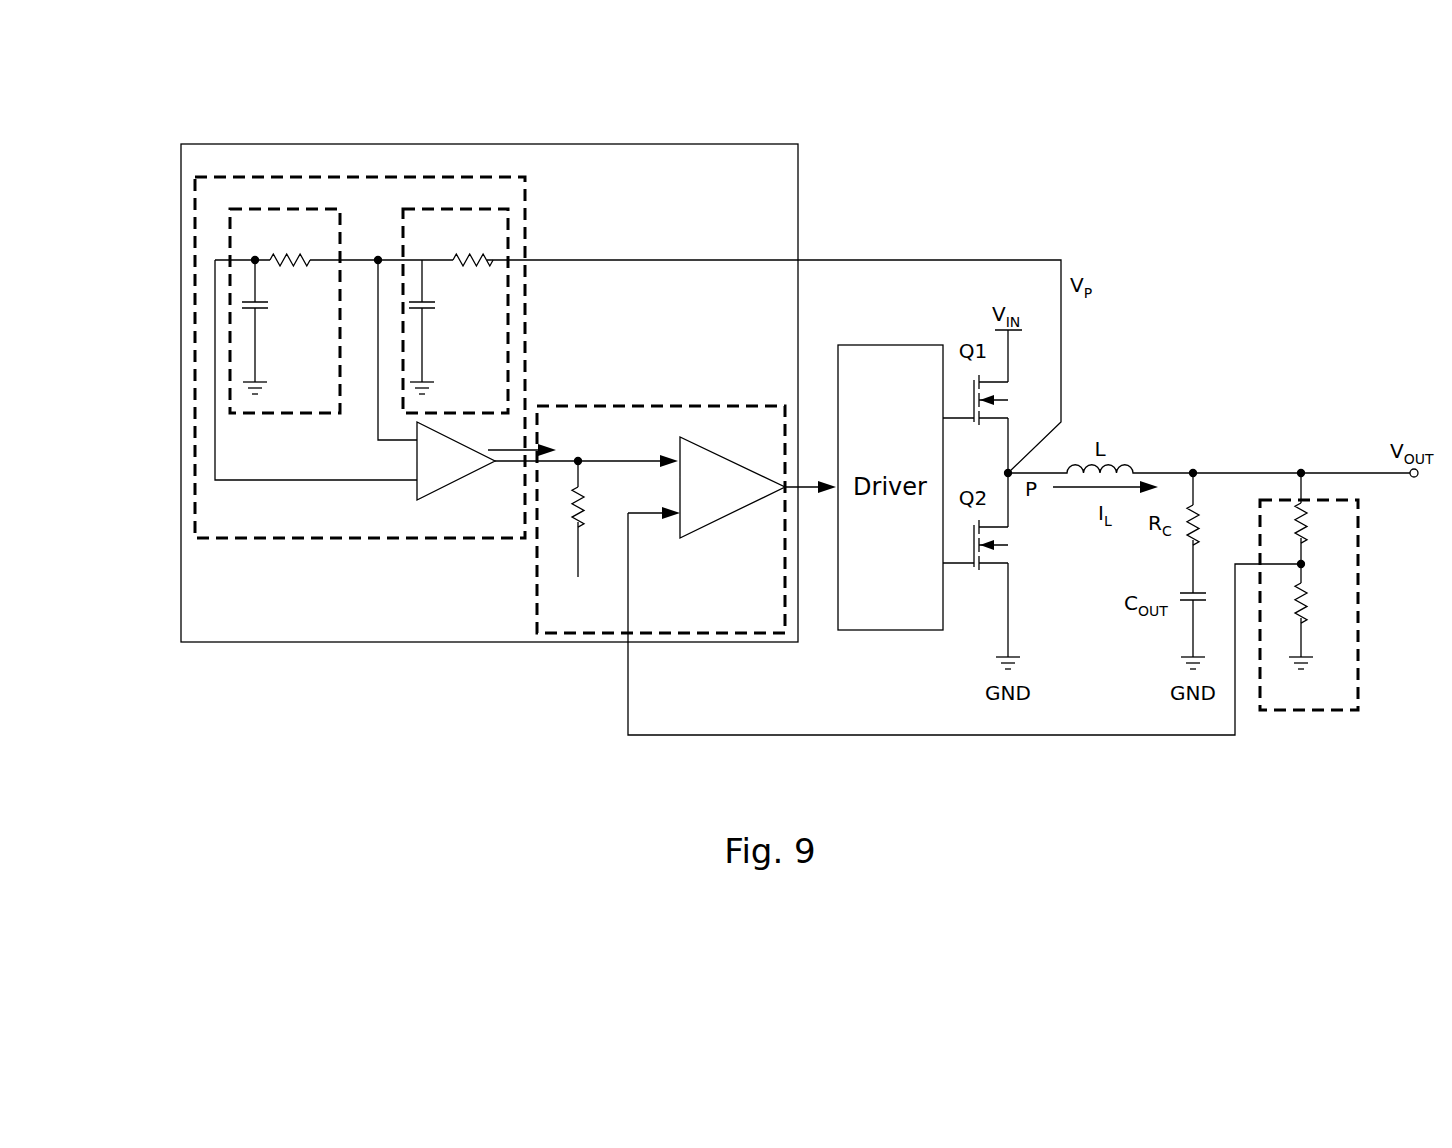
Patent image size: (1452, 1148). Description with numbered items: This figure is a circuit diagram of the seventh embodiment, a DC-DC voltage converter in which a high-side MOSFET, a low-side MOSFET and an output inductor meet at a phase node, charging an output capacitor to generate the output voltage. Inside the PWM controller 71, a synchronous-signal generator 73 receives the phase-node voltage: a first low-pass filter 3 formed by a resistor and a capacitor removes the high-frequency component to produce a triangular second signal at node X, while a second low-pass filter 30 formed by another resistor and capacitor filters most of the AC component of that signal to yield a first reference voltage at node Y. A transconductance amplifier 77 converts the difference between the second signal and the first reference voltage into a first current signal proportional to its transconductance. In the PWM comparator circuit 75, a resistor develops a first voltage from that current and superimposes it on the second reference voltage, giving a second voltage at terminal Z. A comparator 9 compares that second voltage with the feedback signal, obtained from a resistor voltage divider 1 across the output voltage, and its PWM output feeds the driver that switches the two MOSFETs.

The PWM controller 71 is at (487, 645).
The synchronous-signal generator 73 is at (360, 540).
The second low-pass filter 30 is at (232, 313).
The first low-pass filter 3 is at (508, 310).
The transconductance amplifier 77 is at (445, 488).
The PWM comparator circuit 75 is at (658, 405).
The comparator 9 is at (740, 508).
The resistor voltage divider 1 is at (1358, 600).